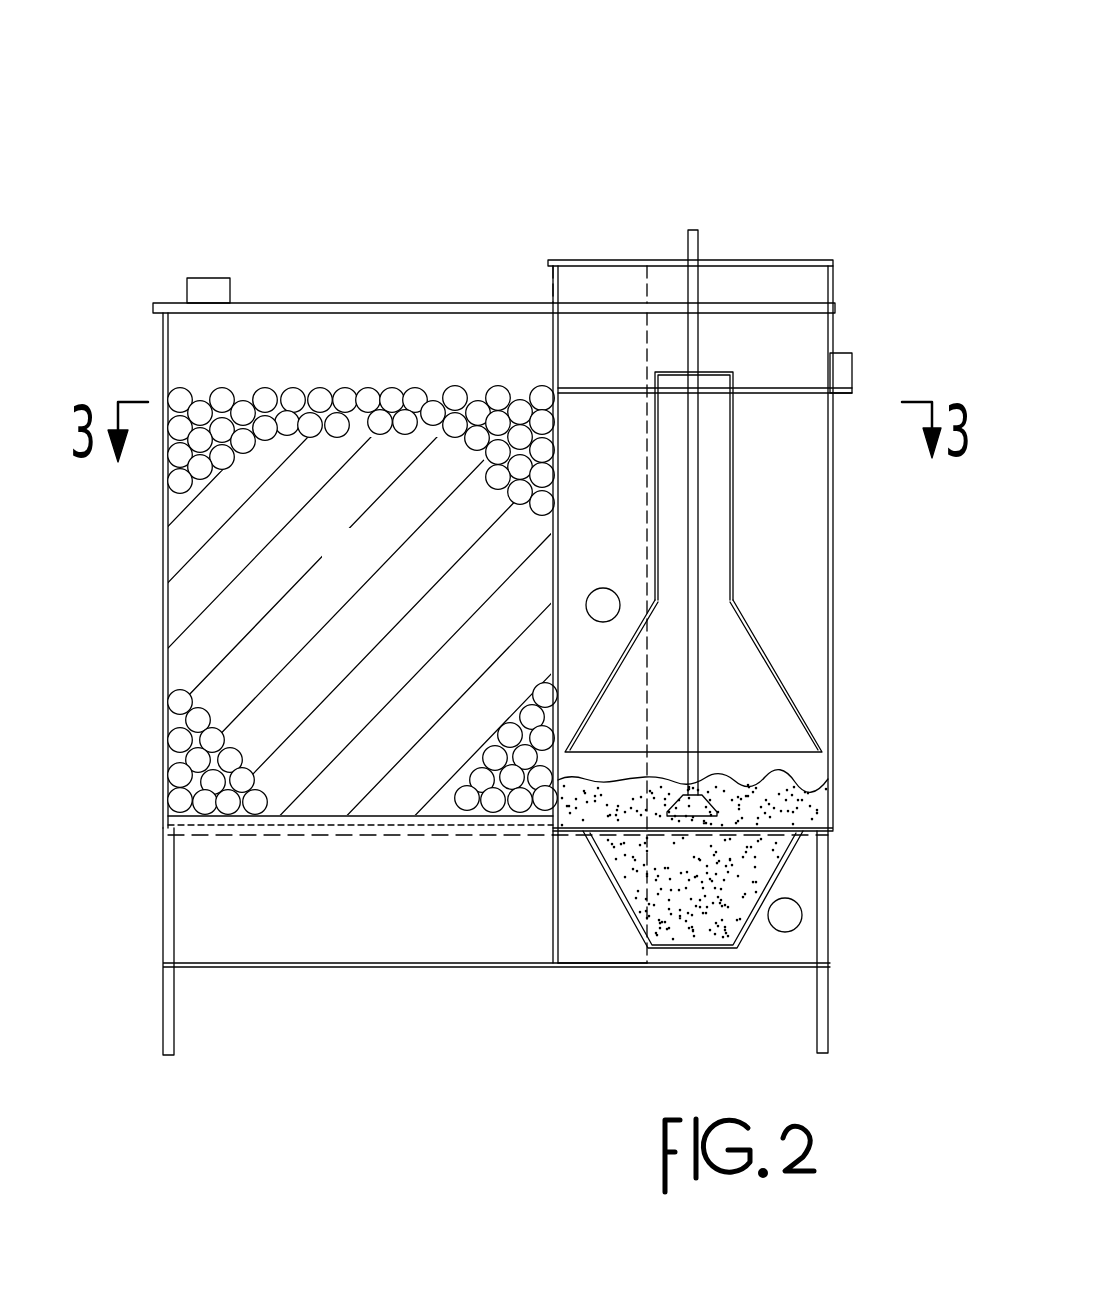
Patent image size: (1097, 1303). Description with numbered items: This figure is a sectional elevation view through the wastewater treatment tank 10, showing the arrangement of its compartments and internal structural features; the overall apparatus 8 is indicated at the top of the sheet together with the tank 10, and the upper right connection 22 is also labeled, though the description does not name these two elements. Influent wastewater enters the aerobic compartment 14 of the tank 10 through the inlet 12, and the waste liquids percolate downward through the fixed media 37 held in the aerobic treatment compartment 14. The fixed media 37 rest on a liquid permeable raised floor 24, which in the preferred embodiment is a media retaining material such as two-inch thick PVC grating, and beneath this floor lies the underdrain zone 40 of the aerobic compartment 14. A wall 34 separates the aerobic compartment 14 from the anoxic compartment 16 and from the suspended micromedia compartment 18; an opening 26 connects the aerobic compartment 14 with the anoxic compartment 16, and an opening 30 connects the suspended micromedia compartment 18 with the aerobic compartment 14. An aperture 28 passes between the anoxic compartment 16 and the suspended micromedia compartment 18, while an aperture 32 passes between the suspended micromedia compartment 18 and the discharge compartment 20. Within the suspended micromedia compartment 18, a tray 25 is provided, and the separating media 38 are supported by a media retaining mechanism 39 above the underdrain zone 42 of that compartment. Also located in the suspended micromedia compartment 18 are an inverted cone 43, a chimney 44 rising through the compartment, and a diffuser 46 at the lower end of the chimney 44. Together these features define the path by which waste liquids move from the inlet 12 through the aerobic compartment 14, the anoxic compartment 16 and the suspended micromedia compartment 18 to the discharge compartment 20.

The apparatus 8 is at (756, 40).
The tank 10 is at (786, 110).
The inlet 12 is at (222, 278).
The aerobic compartment 14 is at (360, 559).
The anoxic compartment 16 is at (616, 299).
The suspended micromedia compartment 18 is at (763, 722).
The discharge compartment 20 is at (763, 299).
The inlet fitting 22 is at (843, 371).
The raised floor 24 is at (165, 830).
The tray 25 is at (752, 396).
The opening 26 is at (553, 918).
The aperture 28 is at (596, 600).
The opening 30 is at (553, 352).
The aperture 32 is at (787, 916).
The wall 34 is at (558, 466).
The fixed media 37 is at (200, 640).
The separating media 38 is at (813, 793).
The media retaining mechanism 39 is at (780, 862).
The underdrain zone 40 is at (425, 941).
The underdrain zone 42 is at (600, 928).
The inverted cone 43 is at (750, 675).
The chimney 44 is at (712, 442).
The diffuser 46 is at (693, 806).